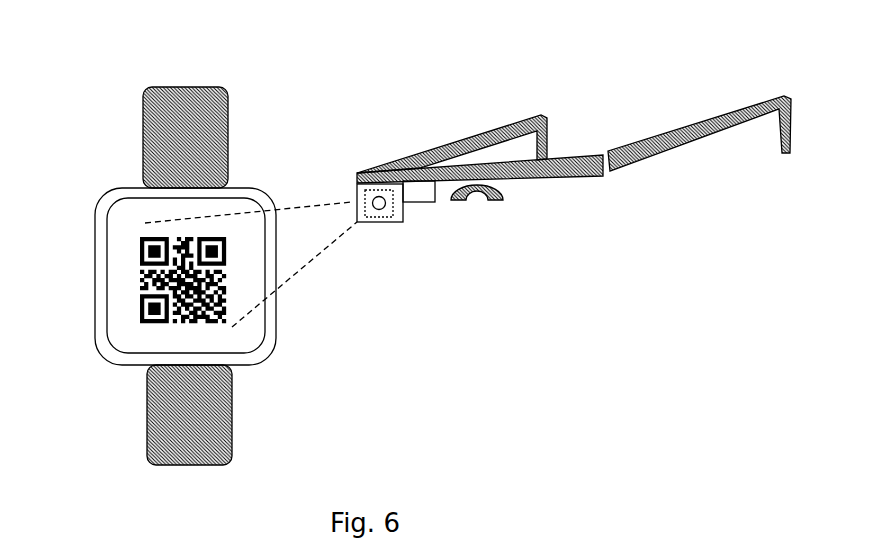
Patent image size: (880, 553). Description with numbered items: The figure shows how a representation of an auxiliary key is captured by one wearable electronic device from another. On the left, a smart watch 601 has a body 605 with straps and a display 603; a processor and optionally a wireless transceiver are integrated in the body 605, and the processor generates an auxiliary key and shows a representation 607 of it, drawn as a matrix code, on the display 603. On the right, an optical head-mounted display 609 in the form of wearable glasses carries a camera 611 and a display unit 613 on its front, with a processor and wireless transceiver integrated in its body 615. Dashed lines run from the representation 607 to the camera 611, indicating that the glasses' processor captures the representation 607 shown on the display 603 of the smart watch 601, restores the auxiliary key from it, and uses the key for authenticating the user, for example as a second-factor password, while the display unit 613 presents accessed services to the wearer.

The smart watch 601 is at (147, 250).
The display 603 is at (105, 309).
The body 605 is at (148, 247).
The representation of the auxiliary key 607 is at (131, 251).
The optical head-mounted display 609 is at (574, 144).
The camera 611 is at (381, 223).
The display unit 613 is at (423, 206).
The body 615 is at (657, 160).